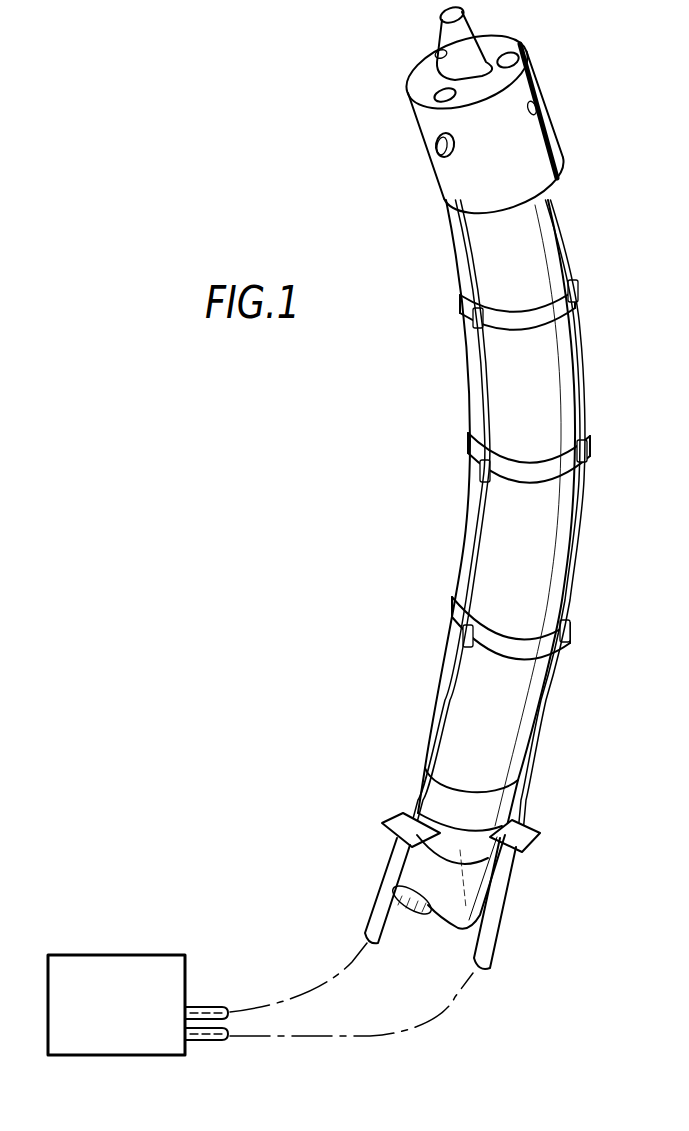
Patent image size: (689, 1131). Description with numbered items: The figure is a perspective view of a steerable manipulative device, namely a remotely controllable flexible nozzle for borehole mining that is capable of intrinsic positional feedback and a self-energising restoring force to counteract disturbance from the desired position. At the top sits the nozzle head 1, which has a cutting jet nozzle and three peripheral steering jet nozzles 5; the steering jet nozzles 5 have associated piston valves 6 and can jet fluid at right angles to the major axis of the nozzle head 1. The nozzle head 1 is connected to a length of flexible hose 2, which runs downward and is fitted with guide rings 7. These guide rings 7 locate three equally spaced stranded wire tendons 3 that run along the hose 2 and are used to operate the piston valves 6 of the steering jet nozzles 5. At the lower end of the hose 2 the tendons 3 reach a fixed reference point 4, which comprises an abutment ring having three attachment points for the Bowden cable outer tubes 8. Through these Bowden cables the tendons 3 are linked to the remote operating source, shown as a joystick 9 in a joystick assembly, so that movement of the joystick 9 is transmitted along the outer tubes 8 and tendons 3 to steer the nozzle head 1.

The nozzle head 1 is at (512, 136).
The flexible hose 2 is at (547, 357).
The operating tendons 3 is at (478, 551).
The fixed reference point 4 is at (442, 852).
The steering jet nozzles 5 is at (441, 157).
The piston valves 6 is at (518, 53).
The guide rings 7 is at (571, 632).
The Bowden cable outer tubes 8 is at (392, 887).
The joystick 9 is at (127, 963).